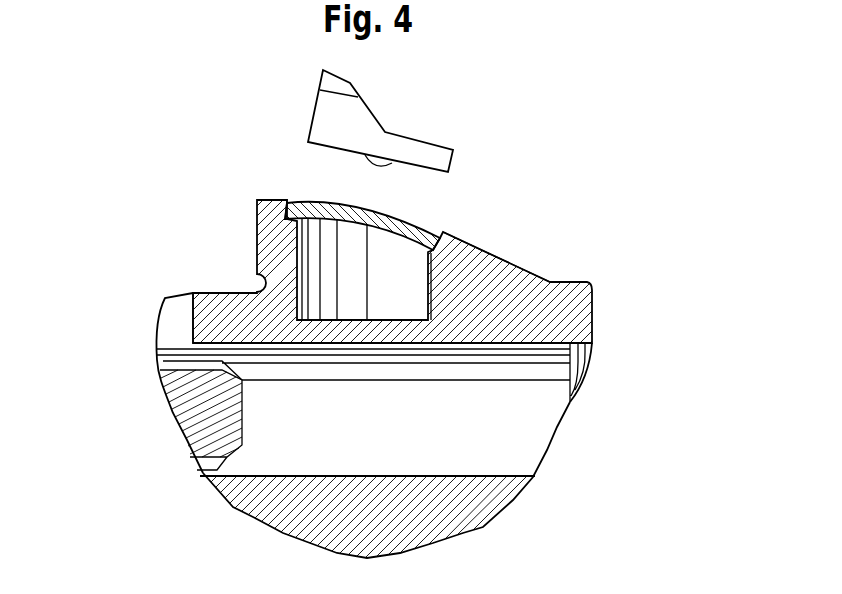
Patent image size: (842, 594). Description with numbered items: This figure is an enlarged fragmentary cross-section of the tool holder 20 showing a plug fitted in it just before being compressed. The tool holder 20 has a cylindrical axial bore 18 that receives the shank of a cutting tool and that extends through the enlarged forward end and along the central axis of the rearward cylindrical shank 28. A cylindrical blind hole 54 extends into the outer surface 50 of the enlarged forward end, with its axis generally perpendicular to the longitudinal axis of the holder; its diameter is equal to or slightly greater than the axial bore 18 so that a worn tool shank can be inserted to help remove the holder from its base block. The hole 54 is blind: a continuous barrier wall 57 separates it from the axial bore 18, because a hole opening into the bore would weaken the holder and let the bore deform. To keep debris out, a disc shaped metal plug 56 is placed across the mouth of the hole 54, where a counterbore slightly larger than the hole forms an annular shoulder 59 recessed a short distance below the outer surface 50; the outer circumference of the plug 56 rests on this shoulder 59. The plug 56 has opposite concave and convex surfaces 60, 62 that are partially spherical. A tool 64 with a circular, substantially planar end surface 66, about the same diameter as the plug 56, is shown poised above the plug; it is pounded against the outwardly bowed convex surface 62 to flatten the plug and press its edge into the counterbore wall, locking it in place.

The axial bore 18 is at (483, 477).
The tool holder 20 is at (596, 303).
The shank 28 is at (217, 290).
The outer surface 50 is at (537, 277).
The blind hole 54 is at (418, 373).
The metal plug 56 is at (418, 222).
The barrier wall 57 is at (354, 318).
The annular shoulder 59 is at (343, 203).
The concave surface 60 is at (363, 227).
The convex surface 62 is at (313, 200).
The tool 64 is at (455, 150).
The planar end surface 66 is at (390, 162).